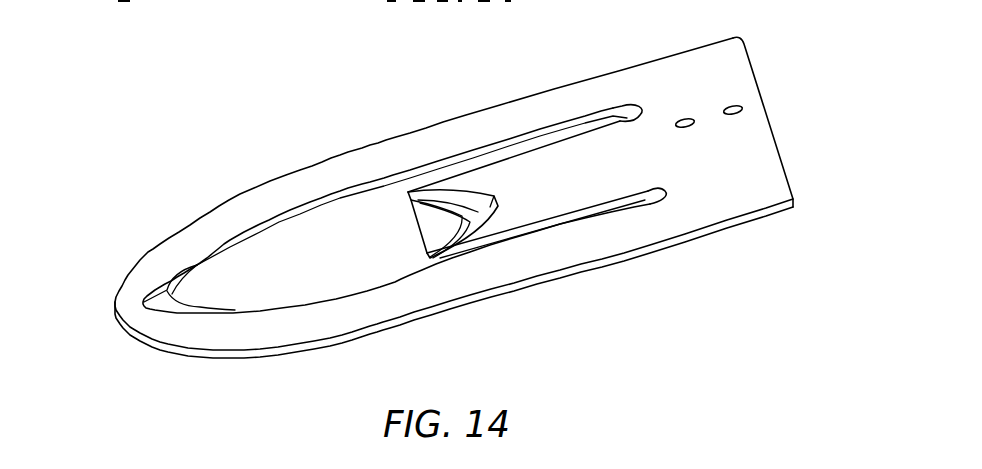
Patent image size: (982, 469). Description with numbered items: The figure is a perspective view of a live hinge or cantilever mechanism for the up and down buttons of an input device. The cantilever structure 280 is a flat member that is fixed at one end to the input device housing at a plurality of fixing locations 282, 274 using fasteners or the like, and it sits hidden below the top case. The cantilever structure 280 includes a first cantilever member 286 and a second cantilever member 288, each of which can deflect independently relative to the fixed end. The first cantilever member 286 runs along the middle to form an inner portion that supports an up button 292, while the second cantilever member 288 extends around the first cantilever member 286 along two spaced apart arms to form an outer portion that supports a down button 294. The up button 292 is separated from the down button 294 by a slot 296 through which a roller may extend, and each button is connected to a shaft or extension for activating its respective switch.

The cantilever structure 280 is at (637, 52).
The fixing location 282 is at (686, 121).
The aperture 274 is at (734, 108).
The first cantilever member 286 is at (525, 175).
The second cantilever member 288 is at (412, 145).
The up button 292 is at (475, 197).
The down button 294 is at (163, 288).
The slot 296 is at (291, 249).